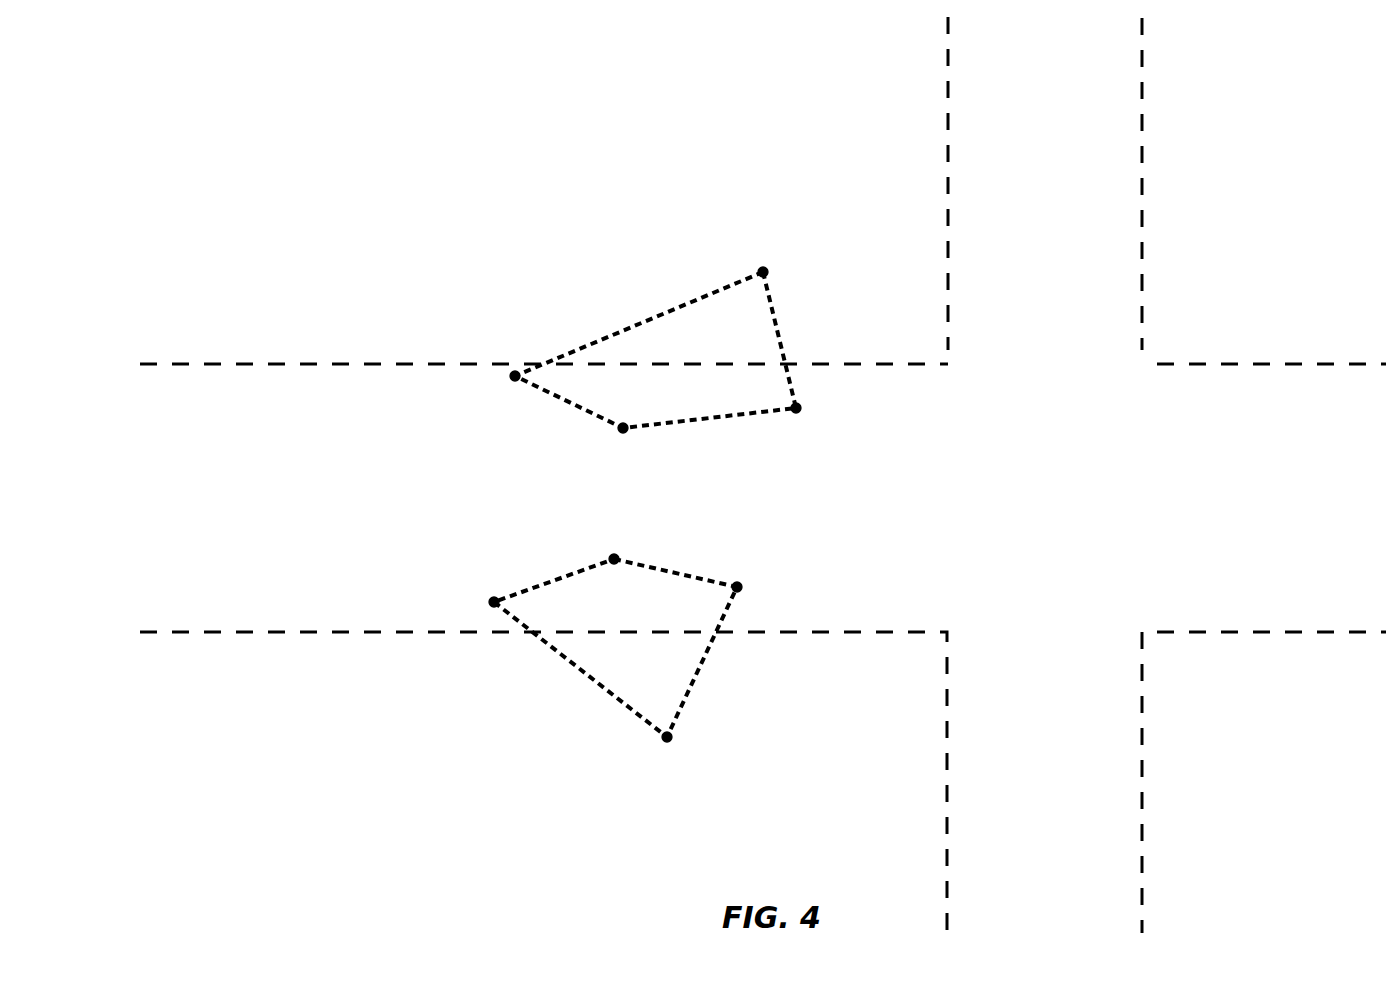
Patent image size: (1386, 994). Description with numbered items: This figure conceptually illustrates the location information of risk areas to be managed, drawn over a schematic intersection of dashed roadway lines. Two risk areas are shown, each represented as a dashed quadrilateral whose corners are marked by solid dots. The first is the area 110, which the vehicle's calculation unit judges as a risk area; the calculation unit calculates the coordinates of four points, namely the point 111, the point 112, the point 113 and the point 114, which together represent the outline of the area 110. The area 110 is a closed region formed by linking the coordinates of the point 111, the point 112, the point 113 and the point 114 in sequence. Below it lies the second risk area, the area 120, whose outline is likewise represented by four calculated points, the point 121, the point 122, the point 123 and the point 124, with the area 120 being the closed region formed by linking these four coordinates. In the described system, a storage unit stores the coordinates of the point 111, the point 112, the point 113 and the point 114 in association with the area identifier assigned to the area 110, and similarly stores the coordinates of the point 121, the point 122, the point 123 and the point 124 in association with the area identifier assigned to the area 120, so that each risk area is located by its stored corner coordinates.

The area 110 is at (779, 338).
The point 111 is at (515, 376).
The point 112 is at (623, 428).
The point 113 is at (796, 408).
The point 114 is at (763, 272).
The area 120 is at (612, 697).
The point 121 is at (614, 559).
The point 122 is at (494, 602).
The point 123 is at (667, 737).
The point 124 is at (737, 587).